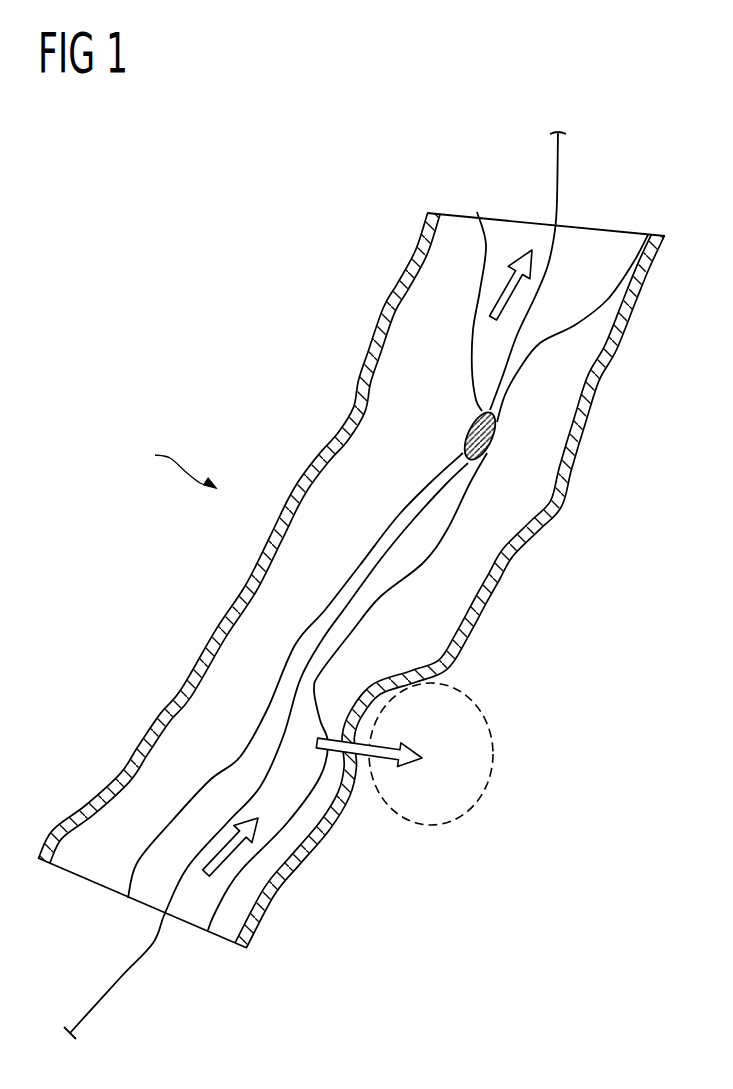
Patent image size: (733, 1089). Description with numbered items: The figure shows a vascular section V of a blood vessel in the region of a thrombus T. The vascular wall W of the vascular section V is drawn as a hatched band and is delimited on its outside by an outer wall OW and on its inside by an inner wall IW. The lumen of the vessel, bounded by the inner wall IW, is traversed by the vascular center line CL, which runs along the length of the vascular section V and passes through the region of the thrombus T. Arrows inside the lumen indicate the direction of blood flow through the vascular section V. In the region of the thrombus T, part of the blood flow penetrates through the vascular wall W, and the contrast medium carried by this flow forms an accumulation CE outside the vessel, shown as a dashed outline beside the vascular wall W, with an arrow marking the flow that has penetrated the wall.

The vascular wall W is at (390, 419).
The inner wall IW is at (483, 258).
The outer wall OW is at (578, 438).
The vascular center line CL is at (560, 181).
The thrombus T is at (497, 442).
The accumulation of contrast medium CE is at (482, 747).
The vascular section V is at (176, 462).